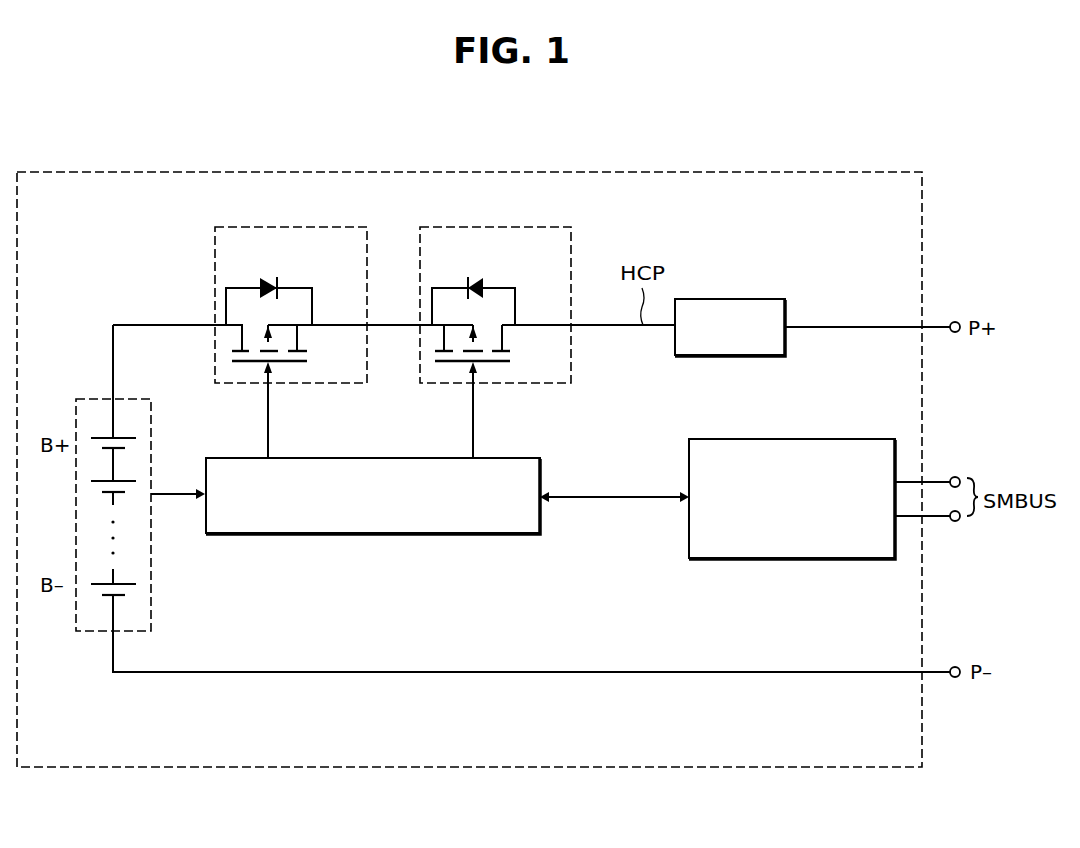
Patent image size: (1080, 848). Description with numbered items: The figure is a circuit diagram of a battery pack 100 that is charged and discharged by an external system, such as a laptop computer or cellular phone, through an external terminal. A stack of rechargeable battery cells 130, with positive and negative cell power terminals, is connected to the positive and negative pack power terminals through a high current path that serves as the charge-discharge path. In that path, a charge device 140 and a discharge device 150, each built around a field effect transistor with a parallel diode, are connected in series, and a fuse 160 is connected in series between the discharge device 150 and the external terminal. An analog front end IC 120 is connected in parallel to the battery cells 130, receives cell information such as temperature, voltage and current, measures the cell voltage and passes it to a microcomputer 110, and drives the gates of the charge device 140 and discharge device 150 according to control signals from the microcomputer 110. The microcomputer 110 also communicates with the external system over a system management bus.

The battery pack 100 is at (480, 173).
The microcomputer 110 is at (828, 438).
The analog front end (AFE) integrated circuit 120 is at (353, 457).
The battery cell 130 is at (90, 398).
The charge device 140 is at (292, 226).
The discharge device 150 is at (498, 228).
The fuse 160 is at (728, 297).